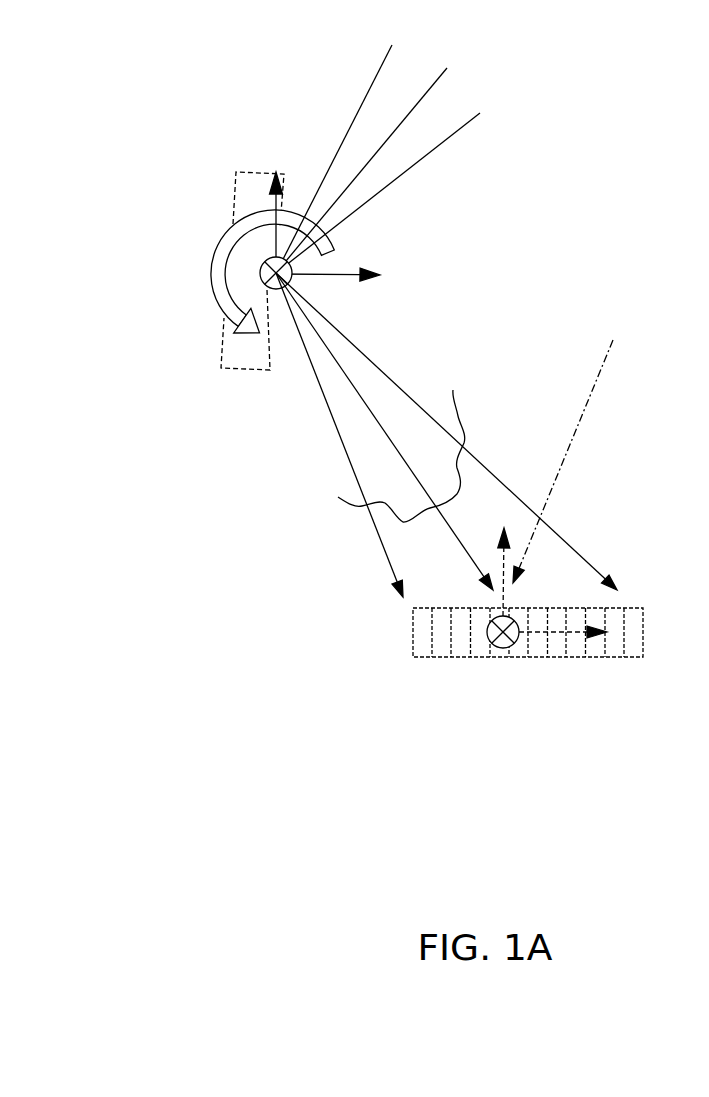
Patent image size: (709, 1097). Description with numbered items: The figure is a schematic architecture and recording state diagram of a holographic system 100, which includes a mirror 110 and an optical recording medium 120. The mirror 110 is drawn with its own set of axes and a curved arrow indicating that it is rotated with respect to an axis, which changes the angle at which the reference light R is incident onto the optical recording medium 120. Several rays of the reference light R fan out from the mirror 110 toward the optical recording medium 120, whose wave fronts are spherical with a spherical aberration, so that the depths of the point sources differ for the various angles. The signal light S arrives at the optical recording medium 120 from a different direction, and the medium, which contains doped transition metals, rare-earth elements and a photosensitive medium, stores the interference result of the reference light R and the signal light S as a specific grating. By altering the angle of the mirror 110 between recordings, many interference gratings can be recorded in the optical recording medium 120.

The holographic system 100 is at (153, 80).
The mirror 110 is at (237, 173).
The optical recording medium 120 is at (643, 658).
The reference light R is at (338, 432).
The signal light S is at (572, 441).